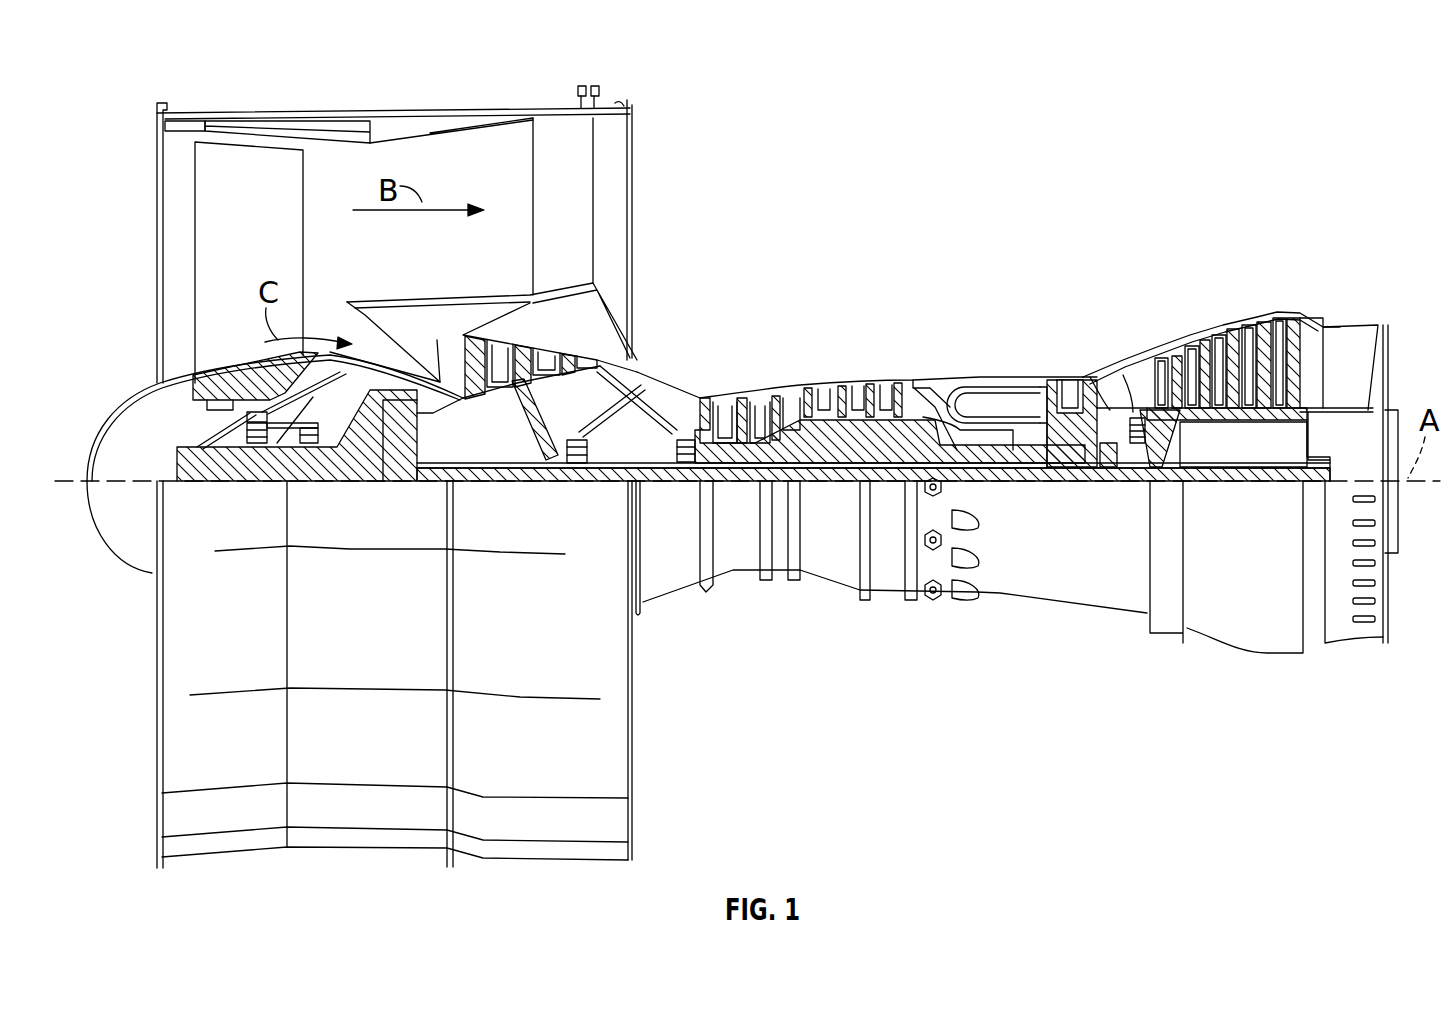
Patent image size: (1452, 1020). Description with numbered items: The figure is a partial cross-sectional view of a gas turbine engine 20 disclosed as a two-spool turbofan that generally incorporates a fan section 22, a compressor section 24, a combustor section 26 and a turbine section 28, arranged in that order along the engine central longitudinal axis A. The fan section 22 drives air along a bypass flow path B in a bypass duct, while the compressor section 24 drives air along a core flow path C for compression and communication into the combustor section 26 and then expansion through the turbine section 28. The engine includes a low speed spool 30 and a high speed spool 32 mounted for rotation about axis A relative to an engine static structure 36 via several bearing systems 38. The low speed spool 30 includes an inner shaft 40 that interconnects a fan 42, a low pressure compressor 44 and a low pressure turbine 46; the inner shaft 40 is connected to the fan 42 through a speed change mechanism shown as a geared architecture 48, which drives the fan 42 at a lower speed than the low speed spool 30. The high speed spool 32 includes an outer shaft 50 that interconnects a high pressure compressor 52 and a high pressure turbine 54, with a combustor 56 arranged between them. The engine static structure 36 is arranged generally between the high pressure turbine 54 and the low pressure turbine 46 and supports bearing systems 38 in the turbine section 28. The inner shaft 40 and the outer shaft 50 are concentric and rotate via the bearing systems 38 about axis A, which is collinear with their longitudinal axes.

The gas turbine engine 20 is at (1205, 147).
The fan section 22 is at (266, 104).
The compressor section 24 is at (861, 364).
The combustor section 26 is at (1001, 361).
The turbine section 28 is at (1230, 363).
The low speed spool 30 is at (850, 487).
The high speed spool 32 is at (905, 425).
The engine static structure 36 is at (892, 603).
The bearing systems 38 is at (262, 438).
The inner shaft 40 is at (646, 483).
The fan 42 is at (274, 245).
The low pressure compressor 44 is at (548, 356).
The low pressure turbine 46 is at (1238, 338).
The geared architecture 48 is at (396, 452).
The outer shaft 50 is at (1013, 462).
The high pressure compressor 52 is at (812, 447).
The high pressure turbine 54 is at (1070, 380).
The combustor 56 is at (997, 396).